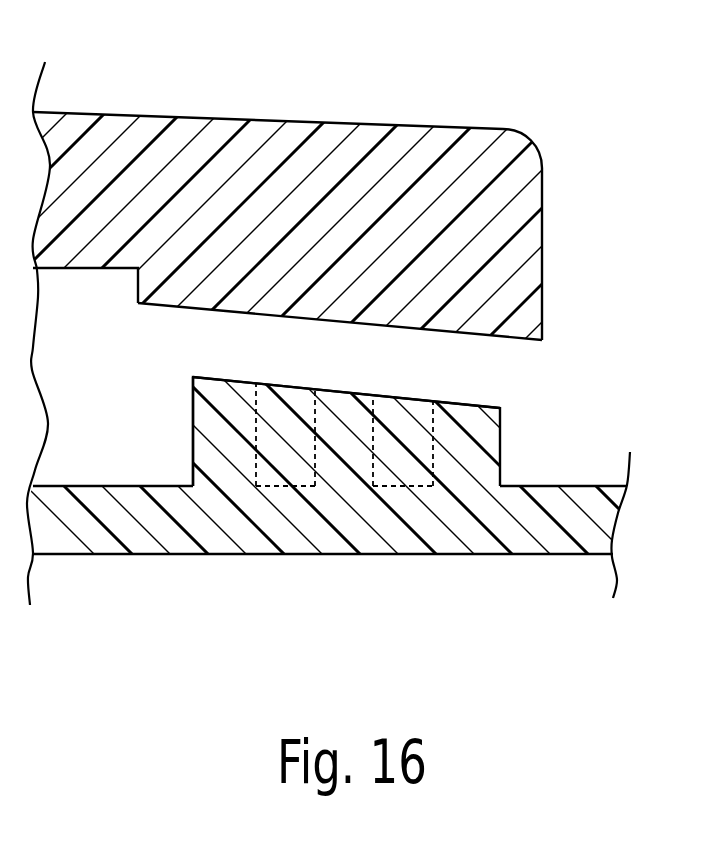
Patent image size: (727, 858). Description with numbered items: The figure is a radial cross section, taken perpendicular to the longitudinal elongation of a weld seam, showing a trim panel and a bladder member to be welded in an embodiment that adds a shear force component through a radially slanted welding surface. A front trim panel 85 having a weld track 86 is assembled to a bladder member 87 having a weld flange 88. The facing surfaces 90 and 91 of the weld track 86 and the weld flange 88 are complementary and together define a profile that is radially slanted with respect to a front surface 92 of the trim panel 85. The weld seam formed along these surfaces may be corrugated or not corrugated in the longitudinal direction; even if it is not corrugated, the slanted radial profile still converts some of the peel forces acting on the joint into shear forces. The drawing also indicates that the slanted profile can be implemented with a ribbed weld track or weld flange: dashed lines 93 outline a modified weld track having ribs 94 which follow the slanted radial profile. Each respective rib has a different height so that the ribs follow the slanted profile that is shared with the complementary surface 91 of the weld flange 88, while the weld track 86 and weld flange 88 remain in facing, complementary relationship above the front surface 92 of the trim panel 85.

The front trim panel 85 is at (335, 510).
The weld track 86 is at (192, 420).
The bladder member 87 is at (118, 112).
The weld flange 88 is at (363, 182).
The facing surface 90 is at (420, 398).
The facing surface 91 is at (233, 315).
The front surface 92 is at (198, 554).
The dashed lines 93 is at (427, 488).
The ribs 94 is at (341, 505).